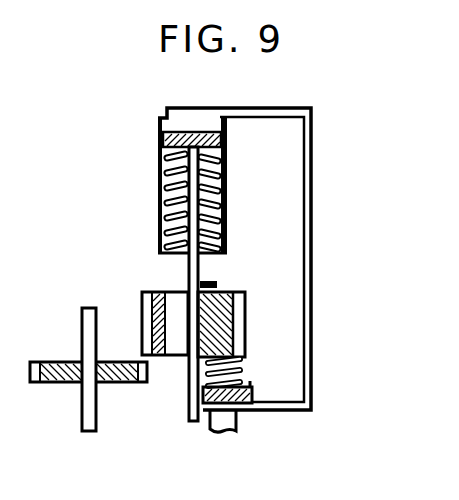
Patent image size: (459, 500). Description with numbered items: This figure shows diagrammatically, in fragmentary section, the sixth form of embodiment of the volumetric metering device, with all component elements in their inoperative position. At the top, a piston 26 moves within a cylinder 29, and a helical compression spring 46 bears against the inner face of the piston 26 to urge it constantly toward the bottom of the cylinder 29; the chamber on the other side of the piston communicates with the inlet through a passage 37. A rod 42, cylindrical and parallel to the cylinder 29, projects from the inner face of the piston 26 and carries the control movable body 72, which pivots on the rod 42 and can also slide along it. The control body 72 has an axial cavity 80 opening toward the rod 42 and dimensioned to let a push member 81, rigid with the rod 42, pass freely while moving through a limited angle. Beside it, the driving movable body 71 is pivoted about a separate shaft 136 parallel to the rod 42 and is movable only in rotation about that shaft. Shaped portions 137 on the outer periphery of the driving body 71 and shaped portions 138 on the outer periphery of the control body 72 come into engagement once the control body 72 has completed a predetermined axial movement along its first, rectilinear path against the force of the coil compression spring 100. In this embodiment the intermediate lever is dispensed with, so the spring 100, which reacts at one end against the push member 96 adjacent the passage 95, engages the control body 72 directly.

The piston 26 is at (228, 138).
The cylinder 29 is at (228, 180).
The passage 37 is at (308, 238).
The rod 42 is at (189, 273).
The helical compression spring 46 is at (215, 217).
The driving body 71 is at (67, 382).
The control body 72 is at (222, 322).
The axial cavity 80 is at (177, 305).
The push member 81 is at (217, 283).
The passage 95 is at (240, 424).
The push member 96 is at (247, 410).
The coil compression spring 100 is at (237, 372).
The shaft 136 is at (80, 306).
The shaped portion 137 is at (30, 370).
The shaped portions 138 is at (147, 320).